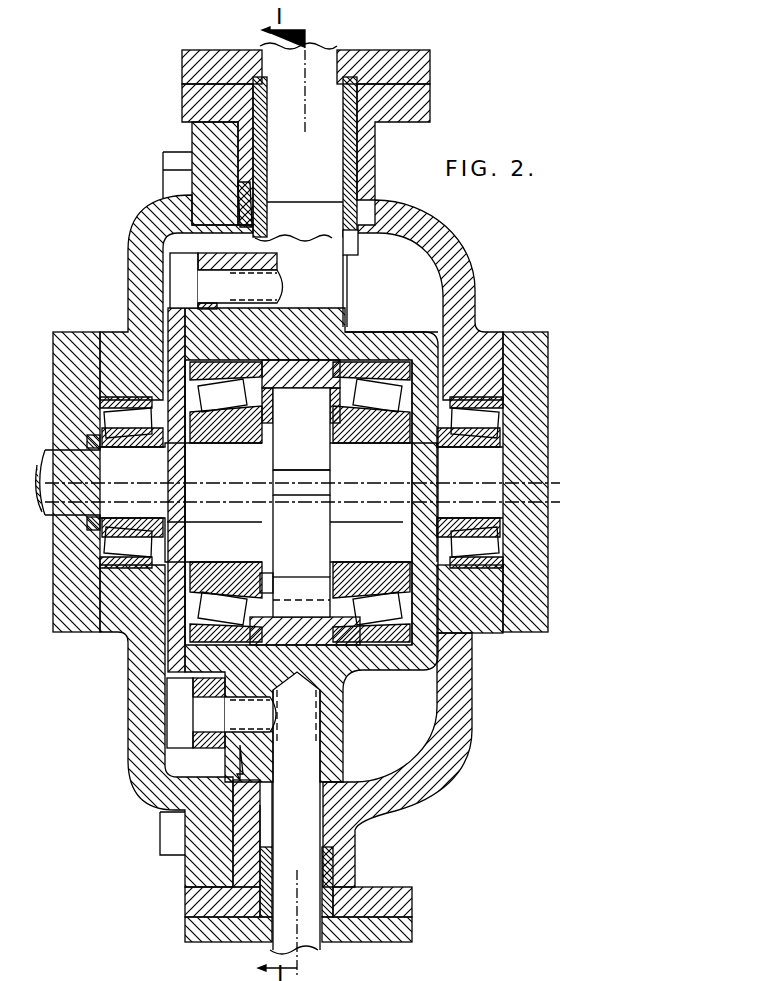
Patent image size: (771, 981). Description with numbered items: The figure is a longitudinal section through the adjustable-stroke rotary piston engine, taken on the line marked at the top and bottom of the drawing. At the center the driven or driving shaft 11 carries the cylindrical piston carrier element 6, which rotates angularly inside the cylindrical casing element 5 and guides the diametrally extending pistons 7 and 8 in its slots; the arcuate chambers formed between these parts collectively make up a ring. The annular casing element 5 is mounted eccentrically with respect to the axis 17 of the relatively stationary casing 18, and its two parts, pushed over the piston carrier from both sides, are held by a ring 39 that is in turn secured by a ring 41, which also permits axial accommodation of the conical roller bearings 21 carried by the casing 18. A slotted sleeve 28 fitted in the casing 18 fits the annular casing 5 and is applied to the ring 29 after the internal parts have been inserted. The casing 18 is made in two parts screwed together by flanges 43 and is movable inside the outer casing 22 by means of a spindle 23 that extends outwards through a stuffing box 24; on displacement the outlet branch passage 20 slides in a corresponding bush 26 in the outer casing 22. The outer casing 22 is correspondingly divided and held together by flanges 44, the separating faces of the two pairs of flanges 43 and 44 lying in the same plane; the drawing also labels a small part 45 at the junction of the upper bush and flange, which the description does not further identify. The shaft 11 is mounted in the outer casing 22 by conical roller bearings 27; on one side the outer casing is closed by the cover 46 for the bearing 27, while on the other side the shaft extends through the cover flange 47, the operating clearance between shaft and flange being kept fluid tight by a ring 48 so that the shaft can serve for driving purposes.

The cylindrical casing element 5 is at (301, 429).
The piston carrier element 6 is at (305, 458).
The piston 7 is at (305, 603).
The piston 8 is at (313, 478).
The shaft 11 is at (372, 483).
The axis 17 is at (228, 503).
The stationary casing 18 is at (378, 348).
The outlet branch passage 20 is at (336, 278).
The conical roller bearings 21 is at (372, 578).
The outer casing 22 is at (130, 292).
The spindle 23 is at (310, 834).
The stuffing box 24 is at (335, 868).
The bush 26 is at (342, 176).
The conical roller bearings 27 is at (301, 482).
The sleeve 28 is at (303, 542).
The ring 29 is at (248, 356).
The ring 39 is at (221, 729).
The ring 41 is at (272, 575).
The flanges 43 is at (170, 262).
The flanges 44 is at (192, 139).
The wedge ring 45 is at (237, 253).
The cover 46 is at (522, 628).
The cover flange 47 is at (75, 620).
The ring 48 is at (90, 448).